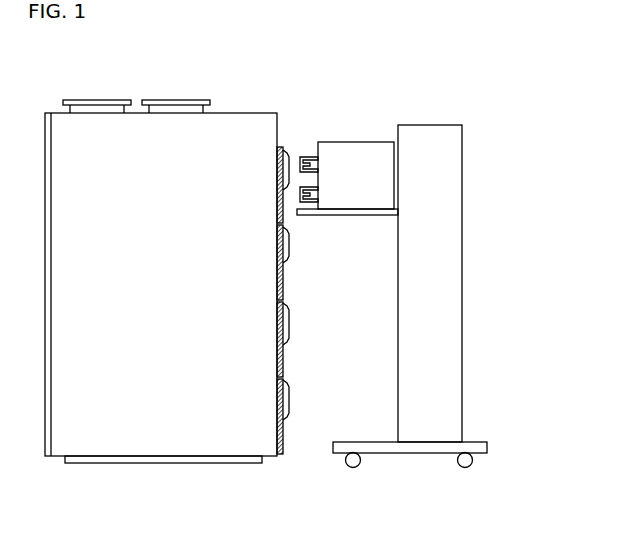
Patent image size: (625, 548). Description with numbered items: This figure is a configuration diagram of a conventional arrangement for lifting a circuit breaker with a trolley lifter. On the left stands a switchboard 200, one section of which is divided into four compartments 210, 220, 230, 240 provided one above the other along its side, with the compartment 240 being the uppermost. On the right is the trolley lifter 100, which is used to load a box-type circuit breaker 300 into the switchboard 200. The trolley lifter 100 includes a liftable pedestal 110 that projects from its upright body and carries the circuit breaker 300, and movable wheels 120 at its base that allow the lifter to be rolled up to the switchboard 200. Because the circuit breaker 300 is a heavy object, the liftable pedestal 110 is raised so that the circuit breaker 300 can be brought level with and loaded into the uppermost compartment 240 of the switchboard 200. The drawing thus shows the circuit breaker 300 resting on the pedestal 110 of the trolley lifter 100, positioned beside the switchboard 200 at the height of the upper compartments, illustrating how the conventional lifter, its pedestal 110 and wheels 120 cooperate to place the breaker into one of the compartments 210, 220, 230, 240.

The trolley lifter 100 is at (432, 125).
The liftable pedestal 110 is at (372, 215).
The movable wheels 120 is at (465, 462).
The switchboard 200 is at (237, 113).
The compartment 210 is at (290, 400).
The compartment 220 is at (290, 322).
The compartment 230 is at (289, 245).
The uppermost compartment 240 is at (284, 148).
The box-type circuit breaker 300 is at (358, 142).